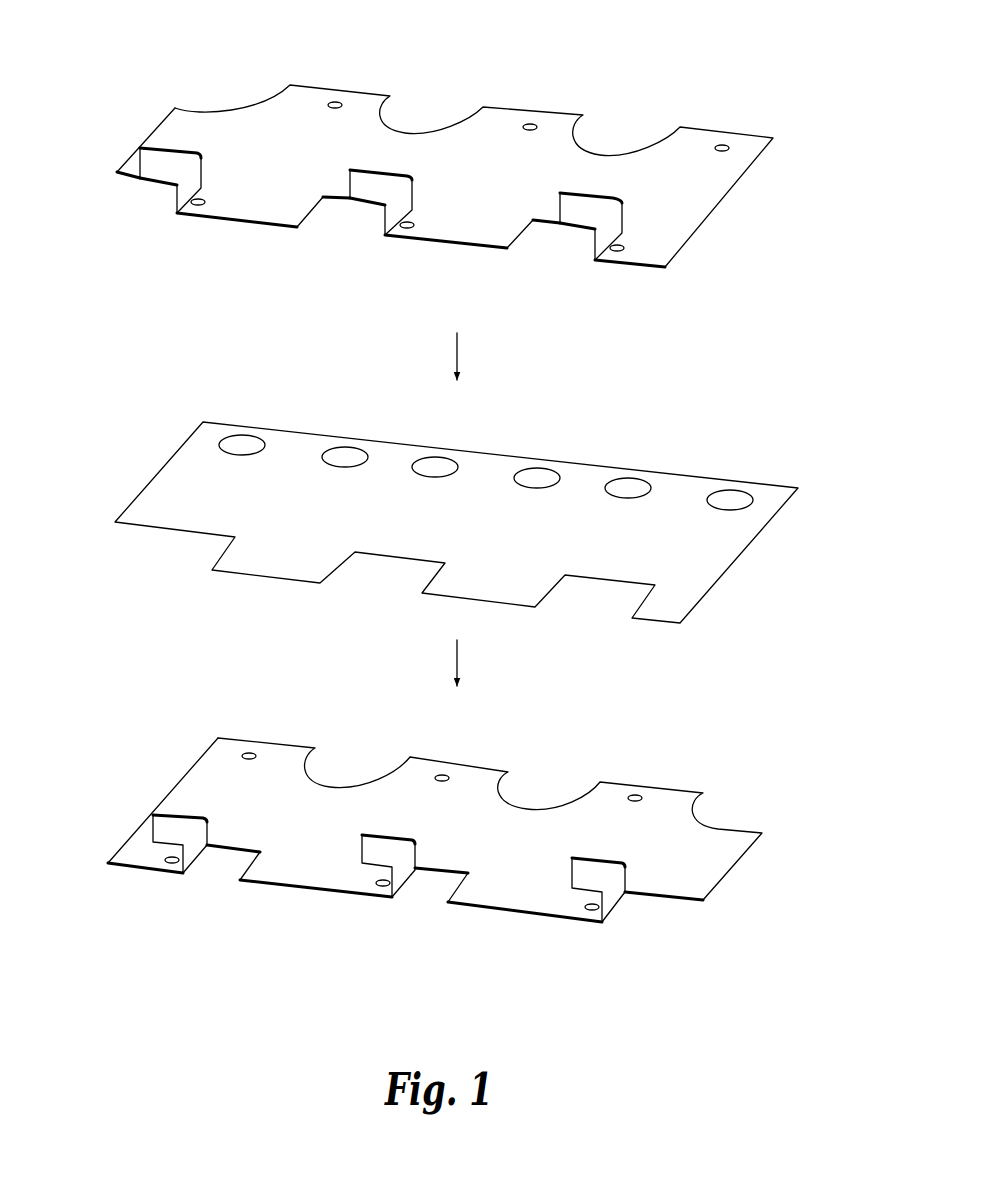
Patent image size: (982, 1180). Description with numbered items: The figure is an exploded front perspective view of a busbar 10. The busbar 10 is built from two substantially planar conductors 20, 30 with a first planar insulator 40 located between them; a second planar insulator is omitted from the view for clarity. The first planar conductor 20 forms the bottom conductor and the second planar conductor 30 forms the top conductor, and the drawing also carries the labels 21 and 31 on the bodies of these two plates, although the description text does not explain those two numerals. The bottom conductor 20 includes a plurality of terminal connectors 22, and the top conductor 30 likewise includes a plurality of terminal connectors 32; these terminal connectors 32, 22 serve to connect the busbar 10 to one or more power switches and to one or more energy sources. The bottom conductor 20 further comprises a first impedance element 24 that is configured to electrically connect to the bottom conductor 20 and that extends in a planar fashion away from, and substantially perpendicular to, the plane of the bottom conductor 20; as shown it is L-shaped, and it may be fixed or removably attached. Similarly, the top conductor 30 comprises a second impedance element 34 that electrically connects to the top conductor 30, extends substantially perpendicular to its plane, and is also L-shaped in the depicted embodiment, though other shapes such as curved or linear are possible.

The busbar 10 is at (155, 88).
The first planar conductor 20 is at (118, 784).
The second plate body 21 is at (219, 785).
The terminal connectors 22 is at (256, 748).
The first impedance element 24 is at (190, 809).
The second planar conductor 30 is at (118, 132).
The first plate body 31 is at (192, 141).
The terminal connectors 32 is at (339, 97).
The second impedance element 34 is at (190, 146).
The first planar insulator 40 is at (118, 478).